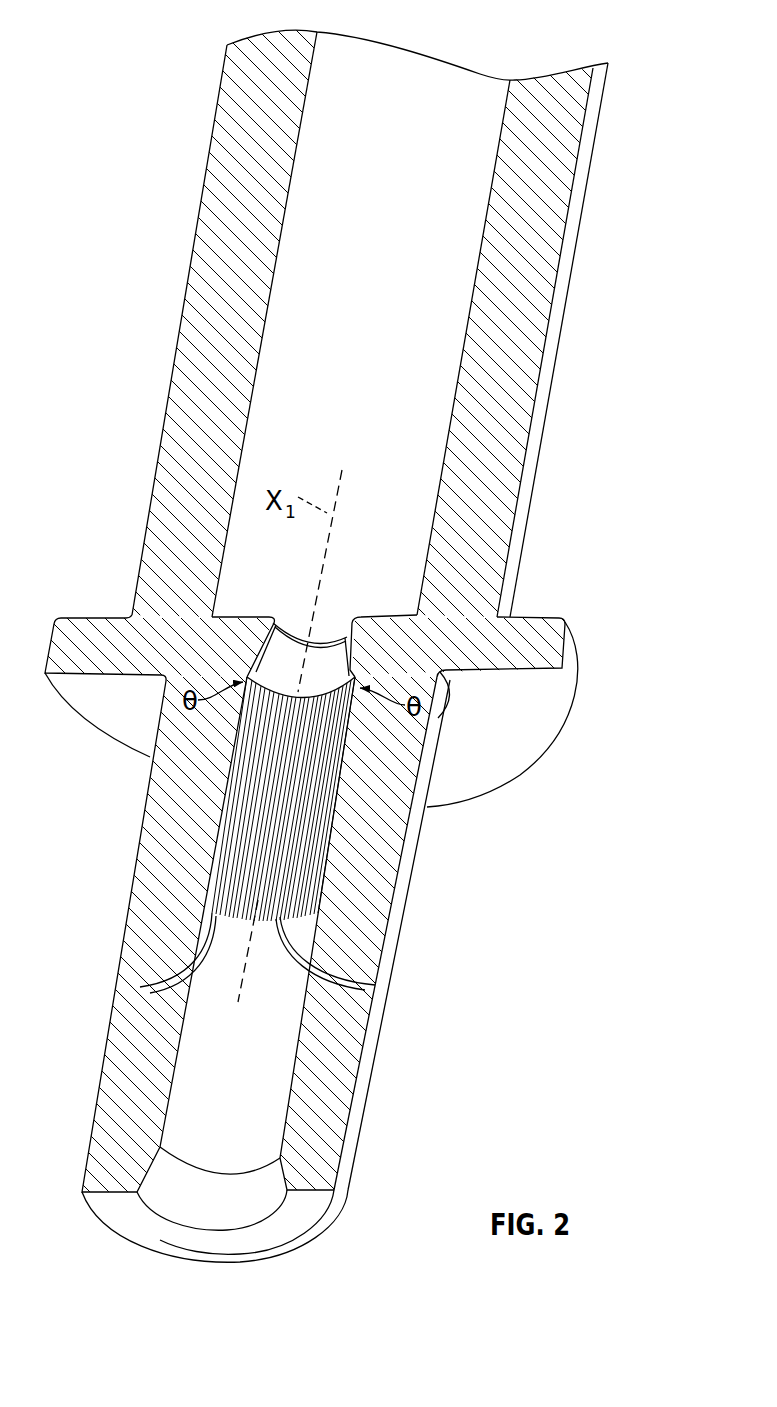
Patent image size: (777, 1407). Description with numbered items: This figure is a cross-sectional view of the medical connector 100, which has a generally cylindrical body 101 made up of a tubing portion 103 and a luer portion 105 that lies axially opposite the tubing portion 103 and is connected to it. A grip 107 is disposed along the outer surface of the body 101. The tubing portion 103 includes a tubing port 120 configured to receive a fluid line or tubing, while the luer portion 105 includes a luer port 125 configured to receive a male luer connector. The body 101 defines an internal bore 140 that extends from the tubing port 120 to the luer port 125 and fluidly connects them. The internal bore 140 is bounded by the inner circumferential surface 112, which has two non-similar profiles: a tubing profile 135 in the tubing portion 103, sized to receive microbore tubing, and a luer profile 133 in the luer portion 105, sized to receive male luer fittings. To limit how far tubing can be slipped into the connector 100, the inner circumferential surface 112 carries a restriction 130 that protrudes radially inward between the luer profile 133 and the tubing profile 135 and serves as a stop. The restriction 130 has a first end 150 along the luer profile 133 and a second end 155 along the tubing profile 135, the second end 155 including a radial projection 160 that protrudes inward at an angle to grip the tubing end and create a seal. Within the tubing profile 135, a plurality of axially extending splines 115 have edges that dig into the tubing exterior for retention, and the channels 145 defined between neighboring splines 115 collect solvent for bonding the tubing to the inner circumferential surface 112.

The medical connector 100 is at (184, 217).
The body 101 is at (582, 230).
The tubing portion 103 is at (392, 1092).
The luer portion 105 is at (561, 354).
The grip 107 is at (582, 690).
The inner circumferential surface 112 is at (447, 405).
The splines 115 is at (375, 985).
The tubing port 120 is at (168, 1199).
The luer port 125 is at (416, 82).
The restriction 130 is at (339, 620).
The luer profile 133 is at (478, 250).
The tubing profile 135 is at (290, 1048).
The internal bore 140 is at (388, 328).
The channels 145 is at (140, 987).
The first end 150 is at (279, 624).
The second end 155 is at (356, 655).
The radial projection 160 is at (297, 626).